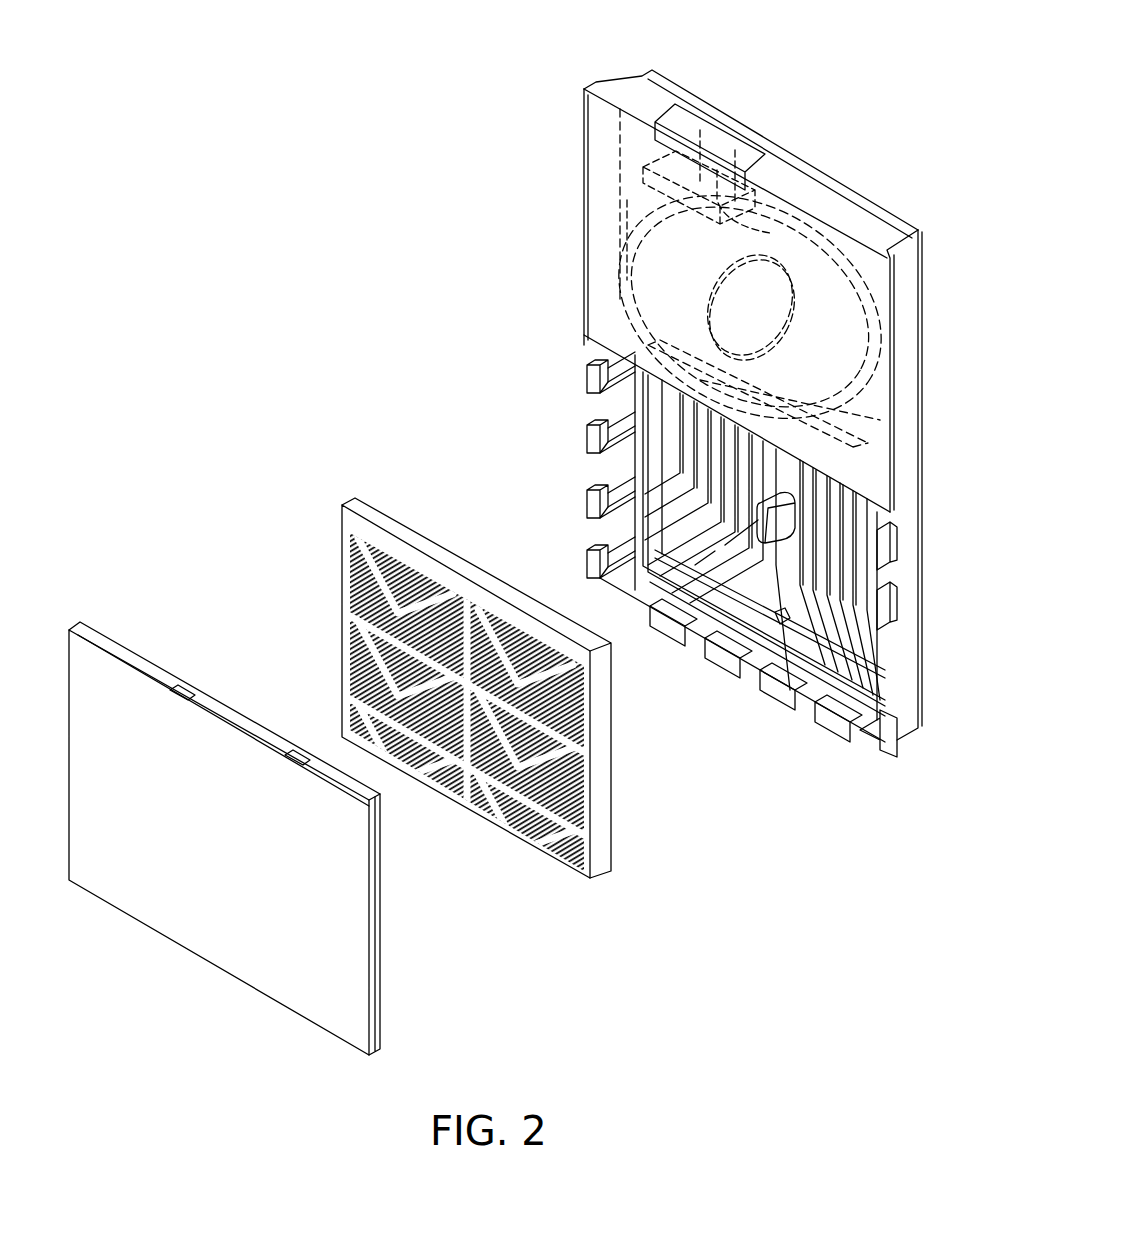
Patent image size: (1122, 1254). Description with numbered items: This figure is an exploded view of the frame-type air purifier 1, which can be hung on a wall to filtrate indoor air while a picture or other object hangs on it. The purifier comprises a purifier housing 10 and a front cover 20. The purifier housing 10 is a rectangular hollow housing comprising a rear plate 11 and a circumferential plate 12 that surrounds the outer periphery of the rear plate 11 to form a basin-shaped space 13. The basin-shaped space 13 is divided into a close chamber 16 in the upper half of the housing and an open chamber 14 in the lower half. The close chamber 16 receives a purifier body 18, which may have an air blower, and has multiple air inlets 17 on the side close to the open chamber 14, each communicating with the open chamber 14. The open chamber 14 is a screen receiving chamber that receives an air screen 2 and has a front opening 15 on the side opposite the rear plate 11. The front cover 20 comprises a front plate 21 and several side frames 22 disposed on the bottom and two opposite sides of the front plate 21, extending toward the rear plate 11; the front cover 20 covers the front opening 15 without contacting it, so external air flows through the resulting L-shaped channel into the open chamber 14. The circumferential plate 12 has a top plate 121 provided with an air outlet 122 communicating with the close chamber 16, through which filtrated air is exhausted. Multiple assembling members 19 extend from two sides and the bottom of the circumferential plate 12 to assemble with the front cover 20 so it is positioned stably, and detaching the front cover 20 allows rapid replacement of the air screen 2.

The frame-type air purifier 1 is at (346, 100).
The air screen 2 is at (358, 500).
The purifier housing 10 is at (822, 170).
The rear plate 11 is at (922, 272).
The circumferential plate 12 is at (905, 540).
The basin-shaped space 13 is at (448, 328).
The open chamber 14 is at (670, 437).
The front opening 15 is at (592, 463).
The close chamber 16 is at (648, 300).
The air inlet 17 is at (898, 383).
The purifier body 18 is at (662, 212).
The assembling member 19 is at (587, 437).
The front cover 20 is at (100, 603).
The front plate 21 is at (143, 900).
The side frame 22 is at (385, 928).
The top plate 121 is at (775, 165).
The air outlet 122 is at (681, 120).